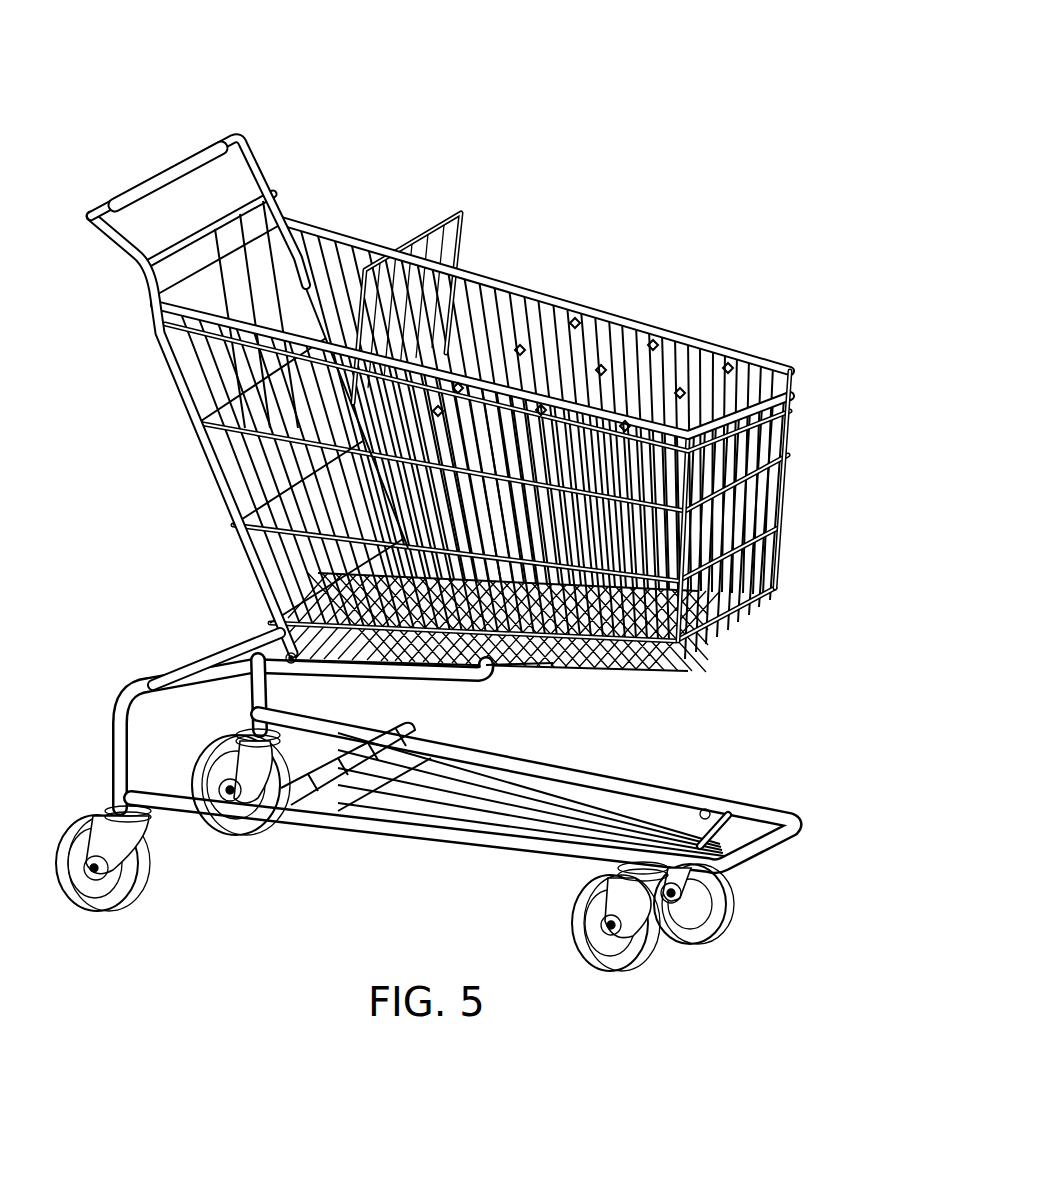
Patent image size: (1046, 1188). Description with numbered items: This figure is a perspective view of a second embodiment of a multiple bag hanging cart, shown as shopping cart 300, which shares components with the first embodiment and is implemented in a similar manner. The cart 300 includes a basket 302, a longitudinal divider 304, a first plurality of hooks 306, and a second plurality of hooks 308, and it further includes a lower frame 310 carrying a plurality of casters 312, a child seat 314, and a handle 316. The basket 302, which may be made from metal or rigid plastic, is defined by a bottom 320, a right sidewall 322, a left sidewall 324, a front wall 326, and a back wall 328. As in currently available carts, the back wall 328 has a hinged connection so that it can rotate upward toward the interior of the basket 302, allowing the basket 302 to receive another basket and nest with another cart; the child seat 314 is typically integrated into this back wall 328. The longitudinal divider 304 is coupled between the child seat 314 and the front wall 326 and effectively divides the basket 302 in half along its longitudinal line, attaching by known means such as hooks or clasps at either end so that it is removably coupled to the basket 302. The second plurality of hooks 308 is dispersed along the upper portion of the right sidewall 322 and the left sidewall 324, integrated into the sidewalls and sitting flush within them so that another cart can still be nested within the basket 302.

The second embodiment shopping cart 300 is at (683, 96).
The basket 302 is at (152, 358).
The longitudinal divider 304 is at (508, 406).
The first plurality of hooks 306 is at (512, 292).
The second plurality of hooks 308 is at (570, 297).
The lower frame 310 is at (124, 690).
The casters 312 is at (140, 855).
The child seat 314 is at (403, 226).
The handle 316 is at (155, 160).
The bottom 320 is at (626, 676).
The right sidewall 322 is at (550, 668).
The left sidewall 324 is at (303, 222).
The front wall 326 is at (770, 565).
The back wall 328 is at (207, 218).